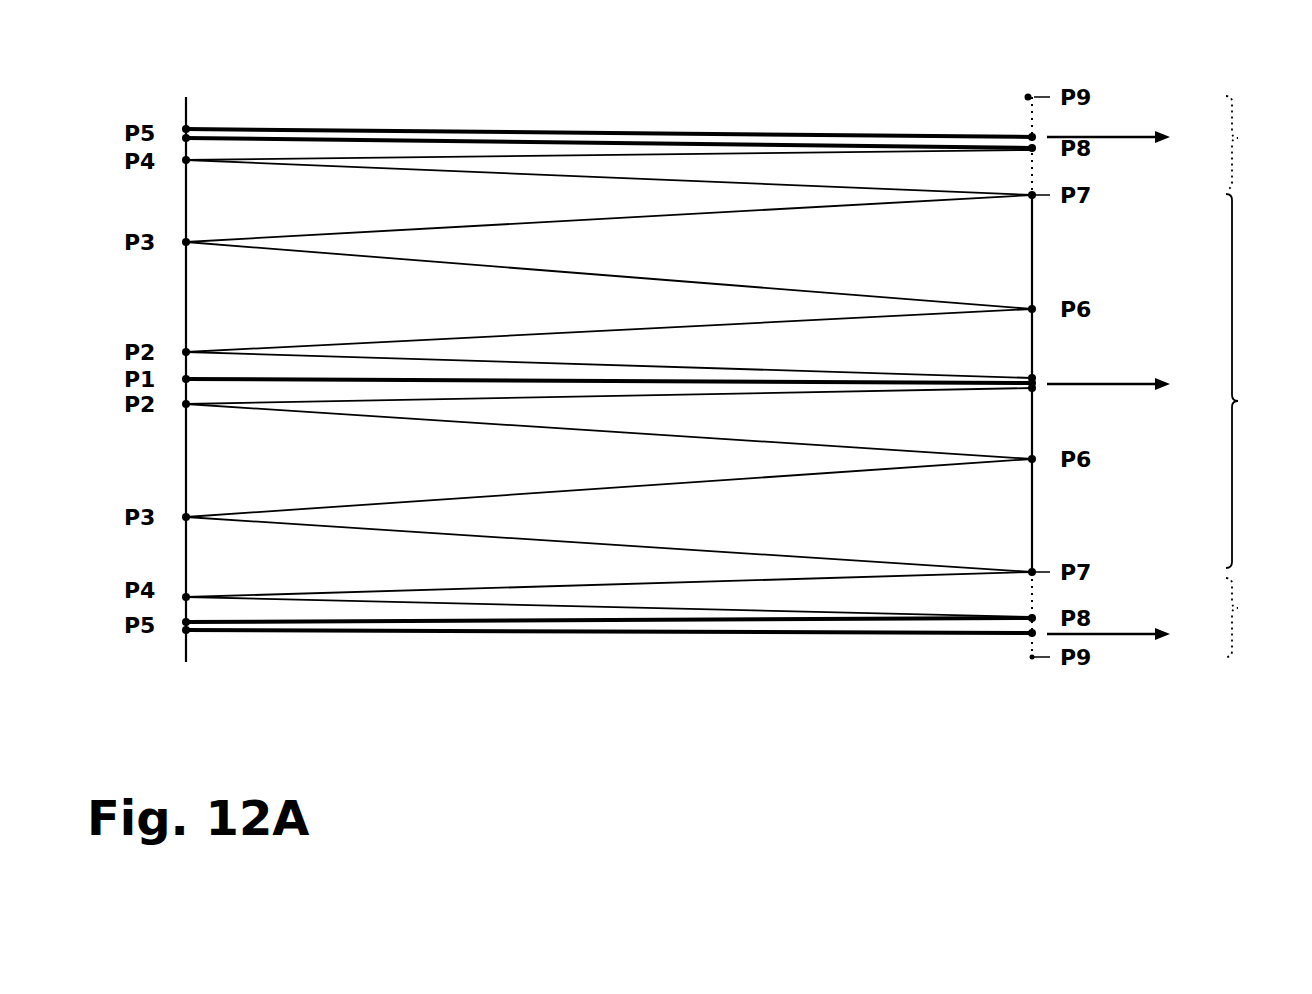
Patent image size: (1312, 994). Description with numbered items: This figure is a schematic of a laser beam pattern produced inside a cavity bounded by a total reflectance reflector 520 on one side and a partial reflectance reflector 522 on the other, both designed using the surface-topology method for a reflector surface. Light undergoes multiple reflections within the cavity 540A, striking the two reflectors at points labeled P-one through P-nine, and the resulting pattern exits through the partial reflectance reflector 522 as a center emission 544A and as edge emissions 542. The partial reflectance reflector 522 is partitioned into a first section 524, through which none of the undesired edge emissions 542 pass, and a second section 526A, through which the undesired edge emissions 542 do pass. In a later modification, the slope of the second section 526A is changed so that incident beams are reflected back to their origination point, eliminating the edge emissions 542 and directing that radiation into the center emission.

The total reflectance reflector 520 is at (192, 112).
The partial reflectance reflector 522 is at (1024, 114).
The first section 524 is at (1256, 381).
The second section 526A is at (1264, 376).
The multiple reflections within the cavity 540A is at (637, 277).
The edge emissions 542 is at (1118, 135).
The center emission 544A is at (1118, 382).